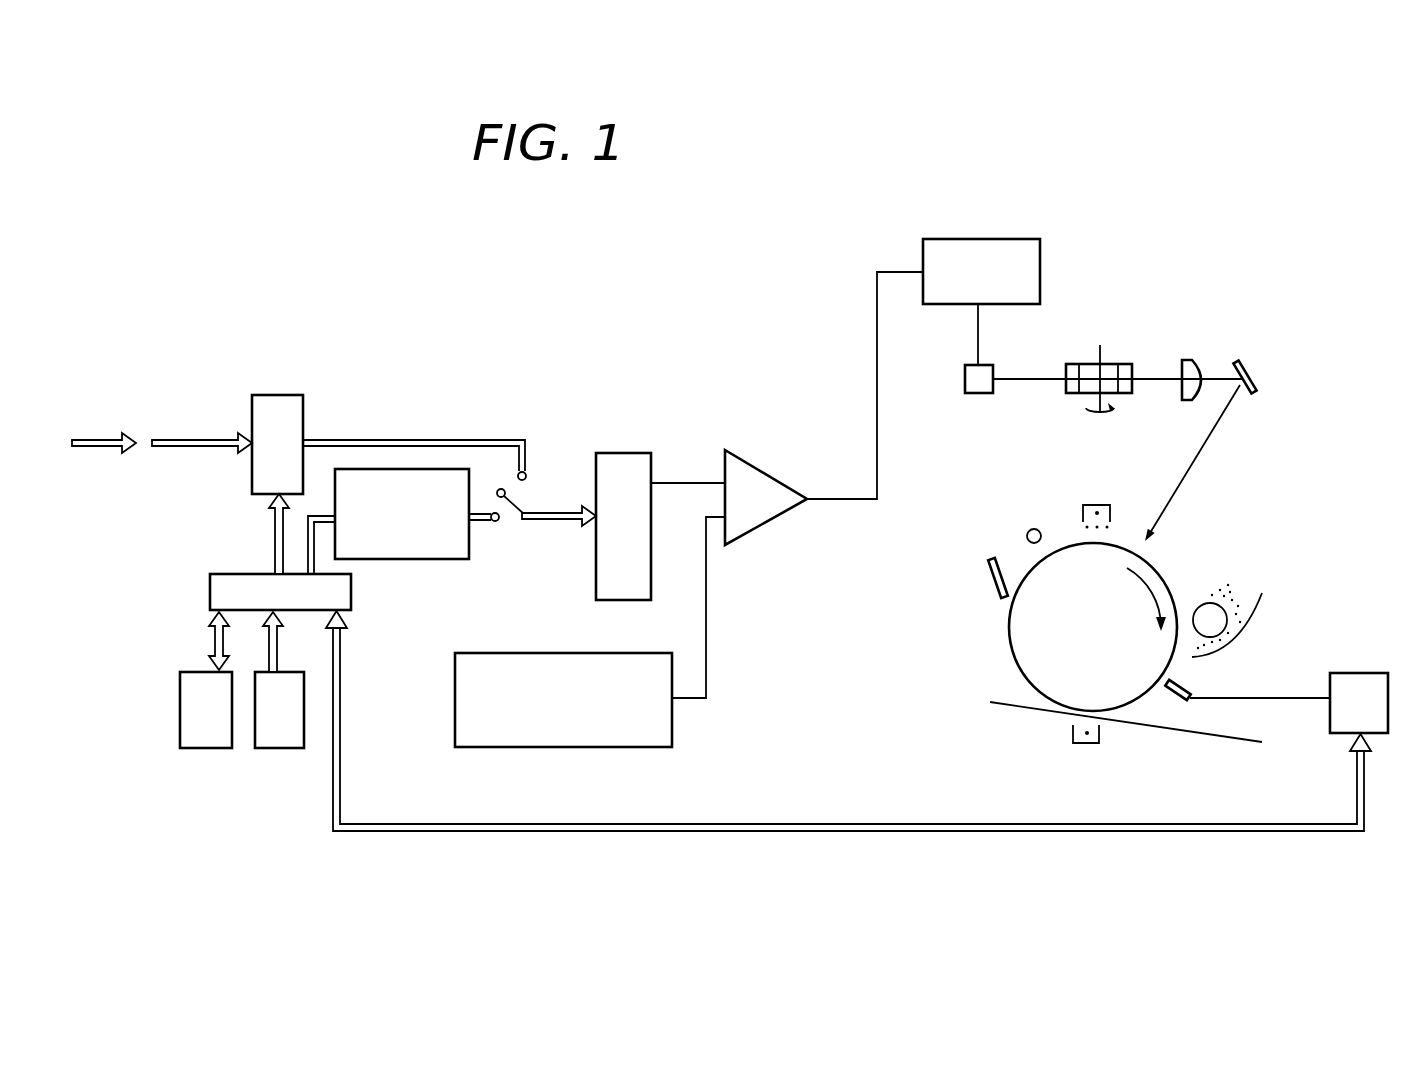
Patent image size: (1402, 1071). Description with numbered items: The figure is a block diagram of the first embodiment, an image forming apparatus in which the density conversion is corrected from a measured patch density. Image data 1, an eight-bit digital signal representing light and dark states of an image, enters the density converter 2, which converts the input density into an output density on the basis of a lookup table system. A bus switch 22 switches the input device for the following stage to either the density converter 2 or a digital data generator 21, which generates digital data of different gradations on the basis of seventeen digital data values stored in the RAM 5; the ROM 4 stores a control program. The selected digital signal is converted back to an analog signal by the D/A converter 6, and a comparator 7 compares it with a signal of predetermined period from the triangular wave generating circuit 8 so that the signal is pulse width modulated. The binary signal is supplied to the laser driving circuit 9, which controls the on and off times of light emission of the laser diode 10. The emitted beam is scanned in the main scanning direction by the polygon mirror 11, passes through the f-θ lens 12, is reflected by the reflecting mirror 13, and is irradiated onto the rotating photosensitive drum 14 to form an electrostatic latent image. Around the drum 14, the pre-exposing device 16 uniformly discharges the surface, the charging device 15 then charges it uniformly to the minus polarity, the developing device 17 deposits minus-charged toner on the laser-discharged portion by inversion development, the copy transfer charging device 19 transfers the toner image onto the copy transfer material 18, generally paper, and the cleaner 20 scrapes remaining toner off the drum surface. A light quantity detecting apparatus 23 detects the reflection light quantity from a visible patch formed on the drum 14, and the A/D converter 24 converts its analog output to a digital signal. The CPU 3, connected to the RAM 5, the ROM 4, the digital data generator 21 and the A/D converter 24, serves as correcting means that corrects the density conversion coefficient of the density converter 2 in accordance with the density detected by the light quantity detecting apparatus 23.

The image data 1 is at (100, 438).
The density converter 2 is at (292, 395).
The CPU 3 is at (352, 594).
The ROM 4 is at (270, 752).
The RAM 5 is at (190, 752).
The D/A converter 6 is at (642, 450).
The comparator 7 is at (772, 467).
The triangular wave generating circuit 8 is at (620, 652).
The laser driving circuit 9 is at (1022, 238).
The laser diode 10 is at (991, 368).
The polygon mirror 11 is at (1123, 360).
The f-θ lens 12 is at (1189, 358).
The reflecting mirror 13 is at (1252, 370).
The photosensitive drum 14 is at (1168, 582).
The charging device 15 is at (1099, 501).
The pre-exposing device 16 is at (1030, 528).
The developing device 17 is at (1246, 619).
The copy transfer material 18 is at (1221, 740).
The copy transfer charging device 19 is at (1087, 746).
The cleaner 20 is at (990, 575).
The digital data generator 21 is at (433, 562).
The bus switch 22 is at (527, 496).
The light quantity detecting apparatus 23 is at (1194, 688).
The A/D converter 24 is at (1370, 671).